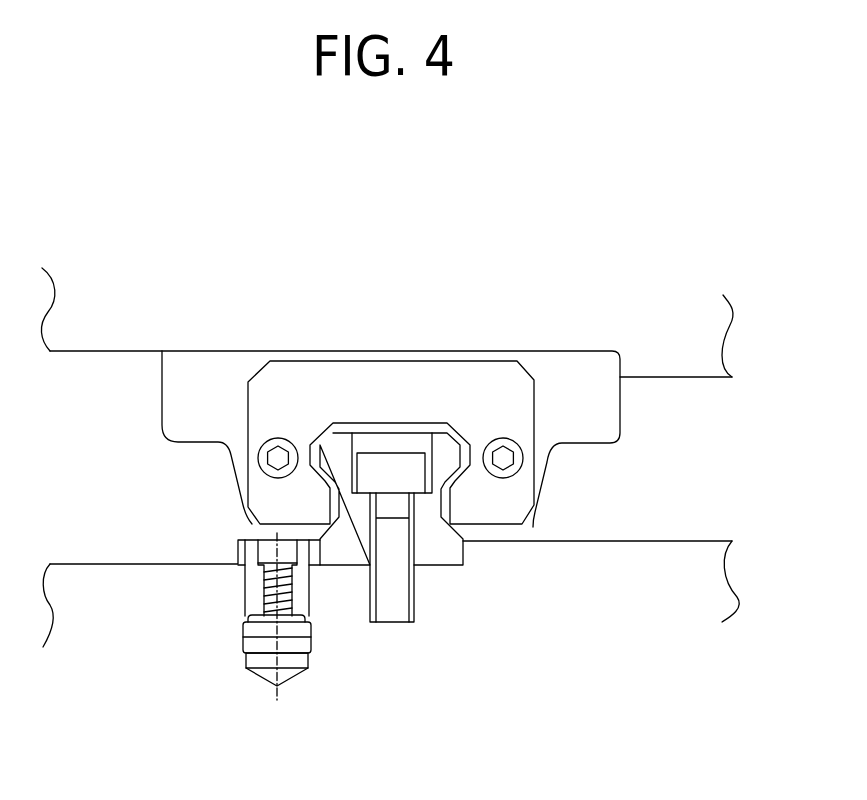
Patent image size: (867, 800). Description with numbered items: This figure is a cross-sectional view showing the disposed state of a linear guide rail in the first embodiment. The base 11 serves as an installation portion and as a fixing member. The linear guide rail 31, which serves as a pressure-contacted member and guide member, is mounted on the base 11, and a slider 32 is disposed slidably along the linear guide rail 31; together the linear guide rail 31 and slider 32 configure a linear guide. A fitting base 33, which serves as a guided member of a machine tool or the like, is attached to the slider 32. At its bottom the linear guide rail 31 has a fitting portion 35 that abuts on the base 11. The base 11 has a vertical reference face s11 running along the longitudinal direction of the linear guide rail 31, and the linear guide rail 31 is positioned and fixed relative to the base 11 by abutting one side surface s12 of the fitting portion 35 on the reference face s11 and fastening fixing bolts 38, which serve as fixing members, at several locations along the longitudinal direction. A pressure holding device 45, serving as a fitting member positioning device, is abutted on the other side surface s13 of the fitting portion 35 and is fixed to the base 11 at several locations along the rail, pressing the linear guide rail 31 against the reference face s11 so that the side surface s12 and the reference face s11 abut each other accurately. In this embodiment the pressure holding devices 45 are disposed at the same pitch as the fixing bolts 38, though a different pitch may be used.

The base 11 is at (676, 542).
The linear guide rail 31 is at (457, 426).
The slider 32 is at (265, 403).
The fitting base 33 is at (713, 324).
The fitting portion 35 is at (343, 561).
The fixing bolt 38 is at (395, 465).
The pressure holding device 45 is at (236, 587).
The reference face s11 is at (460, 558).
The side surface s12 is at (466, 557).
The side surface s13 is at (305, 550).